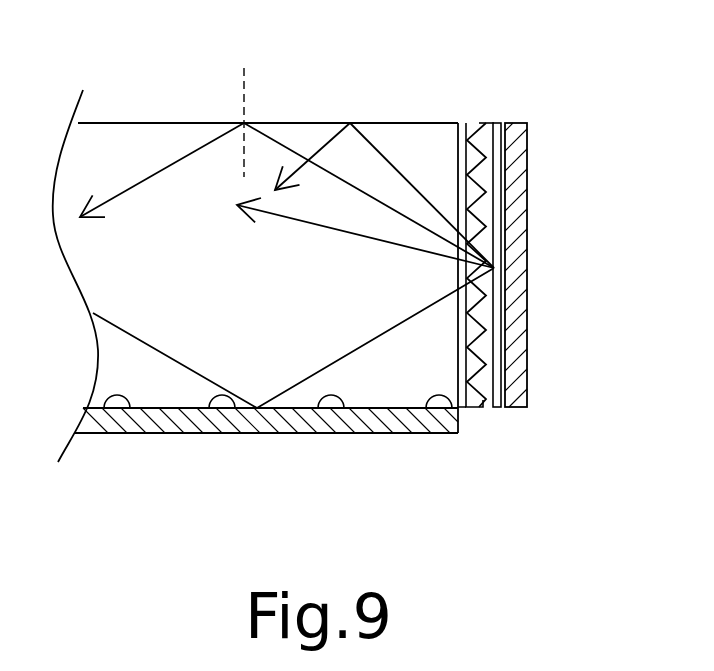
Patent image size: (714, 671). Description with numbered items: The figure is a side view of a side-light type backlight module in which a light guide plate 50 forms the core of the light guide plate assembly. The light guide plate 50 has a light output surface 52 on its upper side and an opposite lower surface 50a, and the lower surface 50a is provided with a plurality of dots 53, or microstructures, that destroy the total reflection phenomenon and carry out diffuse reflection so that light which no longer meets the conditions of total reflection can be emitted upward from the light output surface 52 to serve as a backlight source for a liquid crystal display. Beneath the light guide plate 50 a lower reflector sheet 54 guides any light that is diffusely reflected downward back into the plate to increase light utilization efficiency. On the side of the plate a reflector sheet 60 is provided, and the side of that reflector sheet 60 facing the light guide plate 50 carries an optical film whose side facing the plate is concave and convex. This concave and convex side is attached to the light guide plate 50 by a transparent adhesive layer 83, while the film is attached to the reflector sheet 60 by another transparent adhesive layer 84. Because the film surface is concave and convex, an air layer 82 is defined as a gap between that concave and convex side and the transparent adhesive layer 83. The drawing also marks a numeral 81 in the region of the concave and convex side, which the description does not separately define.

The light guide plate 50 is at (240, 288).
The light output surface 52 is at (182, 122).
The lower surface 50a is at (140, 410).
The dots 53 is at (330, 408).
The lower reflector sheet 54 is at (190, 425).
The transparent adhesive layer 83 is at (464, 122).
The prism structures 81 is at (478, 313).
The air layer 82 is at (473, 368).
The transparent adhesive layer 84 is at (502, 121).
The reflector sheet 60 is at (523, 368).